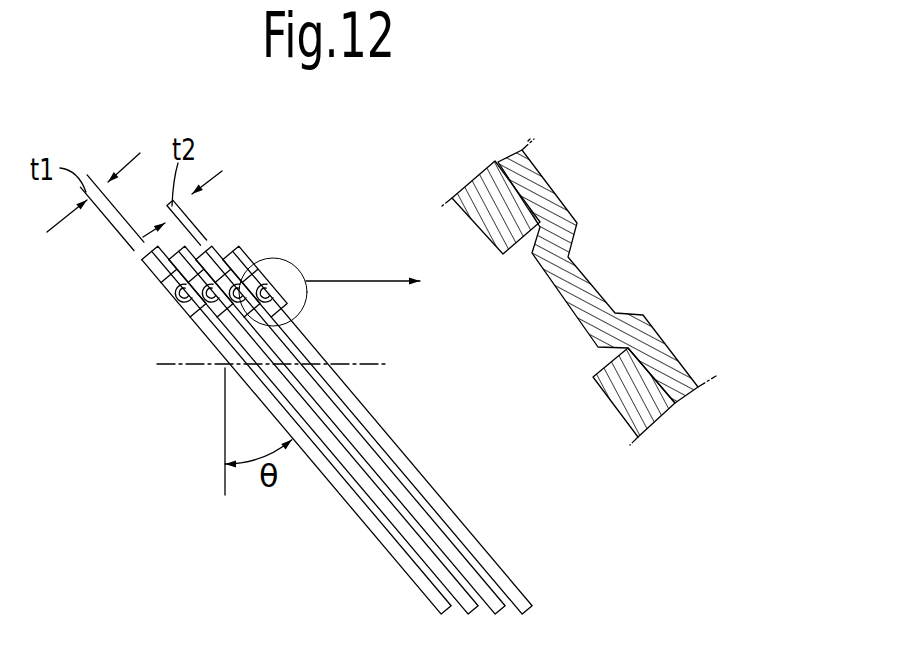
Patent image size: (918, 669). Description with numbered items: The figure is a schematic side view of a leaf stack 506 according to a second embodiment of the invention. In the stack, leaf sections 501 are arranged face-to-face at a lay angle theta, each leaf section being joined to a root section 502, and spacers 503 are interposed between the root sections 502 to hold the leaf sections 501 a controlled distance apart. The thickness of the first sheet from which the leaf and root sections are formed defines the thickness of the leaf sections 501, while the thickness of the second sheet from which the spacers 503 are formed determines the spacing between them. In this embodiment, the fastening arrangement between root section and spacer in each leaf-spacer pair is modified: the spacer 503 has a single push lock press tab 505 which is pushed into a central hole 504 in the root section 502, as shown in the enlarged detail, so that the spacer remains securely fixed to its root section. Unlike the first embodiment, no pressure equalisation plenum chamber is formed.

The leaf section 501 is at (380, 546).
The root section 502 is at (160, 272).
The spacer 503 is at (218, 330).
The central hole 504 is at (520, 246).
The push lock press tab 505 is at (587, 303).
The leaf stack 506 is at (288, 375).